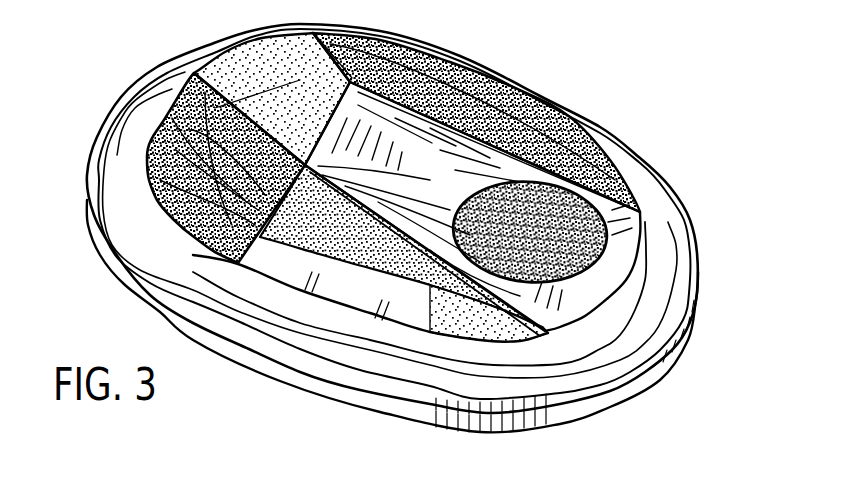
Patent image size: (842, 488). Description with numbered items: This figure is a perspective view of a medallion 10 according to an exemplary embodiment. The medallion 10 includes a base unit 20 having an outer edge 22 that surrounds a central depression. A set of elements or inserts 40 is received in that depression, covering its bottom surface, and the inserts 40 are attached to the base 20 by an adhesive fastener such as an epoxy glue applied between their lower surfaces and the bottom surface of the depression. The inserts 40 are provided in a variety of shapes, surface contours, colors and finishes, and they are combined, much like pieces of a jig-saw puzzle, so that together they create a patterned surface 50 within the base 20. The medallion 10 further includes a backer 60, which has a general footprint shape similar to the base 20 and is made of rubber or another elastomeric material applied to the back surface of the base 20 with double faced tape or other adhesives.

The medallion 10 is at (107, 112).
The base unit 20 is at (587, 390).
The outer edge 22 is at (660, 223).
The inserts 40 is at (467, 163).
The patterned surface 50 is at (593, 130).
The backer 60 is at (623, 397).